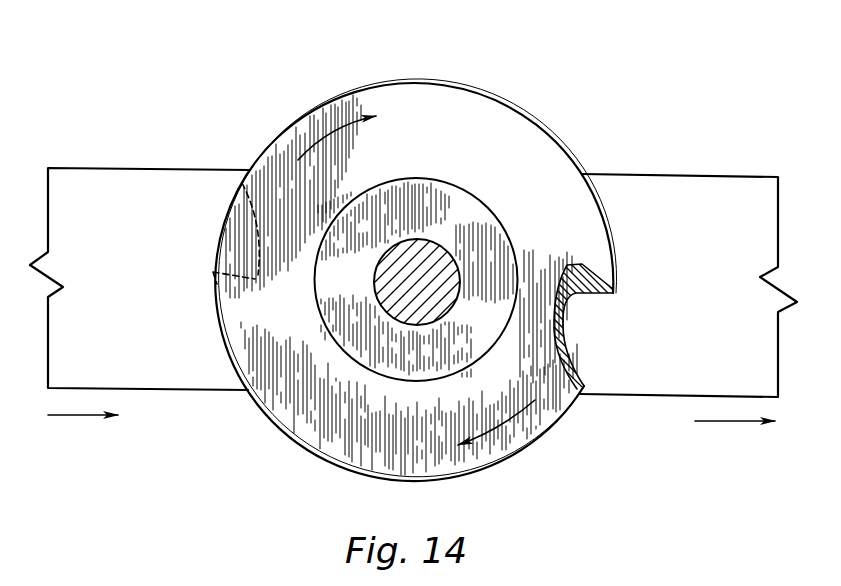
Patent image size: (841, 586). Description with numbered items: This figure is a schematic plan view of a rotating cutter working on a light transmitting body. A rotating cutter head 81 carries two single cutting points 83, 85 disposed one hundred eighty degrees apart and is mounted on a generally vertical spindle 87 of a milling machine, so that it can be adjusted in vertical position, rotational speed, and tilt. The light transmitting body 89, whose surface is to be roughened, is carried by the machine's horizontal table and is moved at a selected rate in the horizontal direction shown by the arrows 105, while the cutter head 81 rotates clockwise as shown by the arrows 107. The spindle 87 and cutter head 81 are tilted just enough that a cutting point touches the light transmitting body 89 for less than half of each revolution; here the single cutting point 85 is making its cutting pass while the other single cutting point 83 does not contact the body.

The rotating cutter head 81 is at (408, 64).
The single cutting point 83 is at (228, 306).
The single cutting point 85 is at (603, 294).
The spindle 87 is at (441, 240).
The light transmitting body 89 is at (183, 169).
The arrows 105 is at (68, 417).
The arrows 107 is at (333, 133).